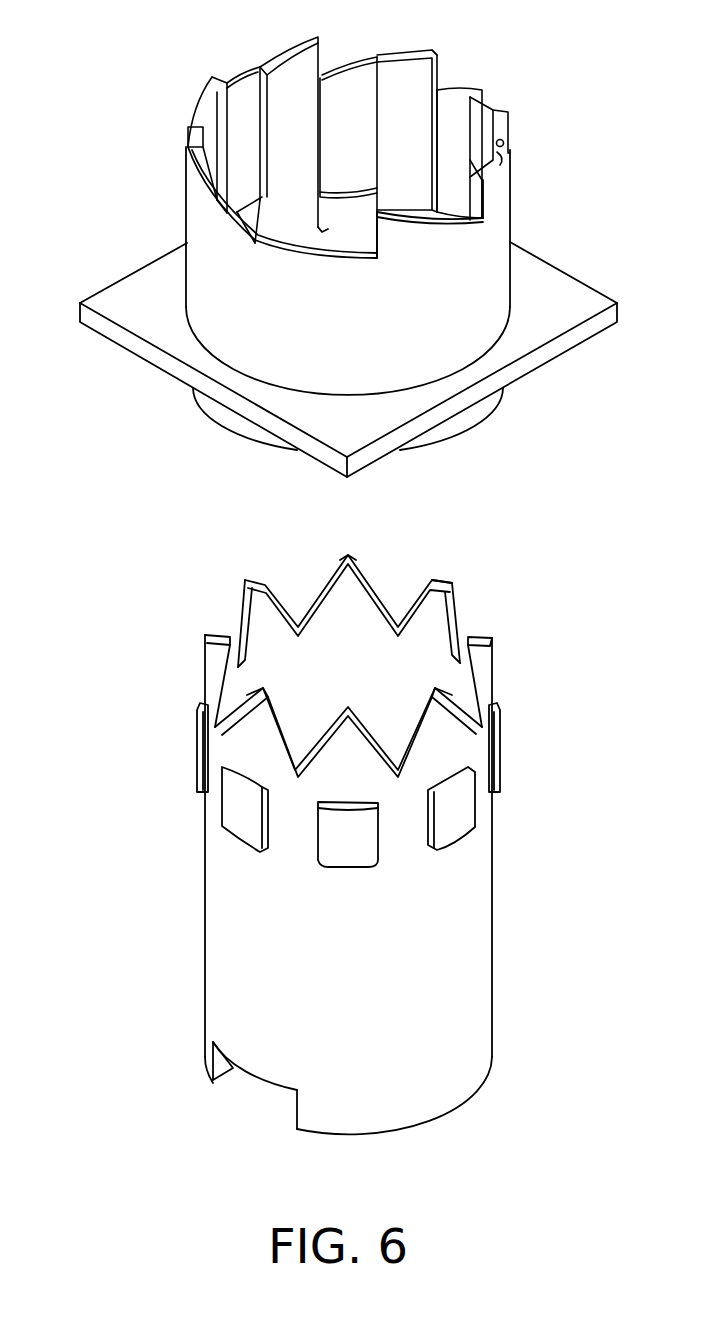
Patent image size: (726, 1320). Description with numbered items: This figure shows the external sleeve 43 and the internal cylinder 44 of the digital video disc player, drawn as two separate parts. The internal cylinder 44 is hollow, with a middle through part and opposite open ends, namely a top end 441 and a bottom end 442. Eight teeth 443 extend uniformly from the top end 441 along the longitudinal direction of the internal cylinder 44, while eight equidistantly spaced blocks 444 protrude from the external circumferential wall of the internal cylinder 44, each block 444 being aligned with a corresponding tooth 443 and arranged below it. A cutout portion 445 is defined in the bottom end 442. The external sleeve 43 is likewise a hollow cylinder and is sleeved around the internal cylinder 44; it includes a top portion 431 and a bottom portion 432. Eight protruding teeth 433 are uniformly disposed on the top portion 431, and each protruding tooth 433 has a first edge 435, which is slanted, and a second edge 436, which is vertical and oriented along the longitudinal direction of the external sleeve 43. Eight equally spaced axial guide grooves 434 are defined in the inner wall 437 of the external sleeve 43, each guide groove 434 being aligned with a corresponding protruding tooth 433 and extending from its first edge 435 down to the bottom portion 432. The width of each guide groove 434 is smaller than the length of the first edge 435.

The external sleeve 43 is at (485, 245).
The top portion 431 is at (182, 175).
The bottom portion 432 is at (205, 422).
The protruding teeth 433 is at (270, 52).
The axial guide grooves 434 is at (355, 85).
The first edge 435 is at (410, 52).
The second edge 436 is at (437, 70).
The inner wall 437 is at (455, 105).
The internal cylinder 44 is at (458, 943).
The top end 441 is at (228, 592).
The bottom end 442 is at (478, 1105).
The teeth 443 is at (455, 607).
The blocks 444 is at (458, 813).
The cutout portion 445 is at (255, 1083).